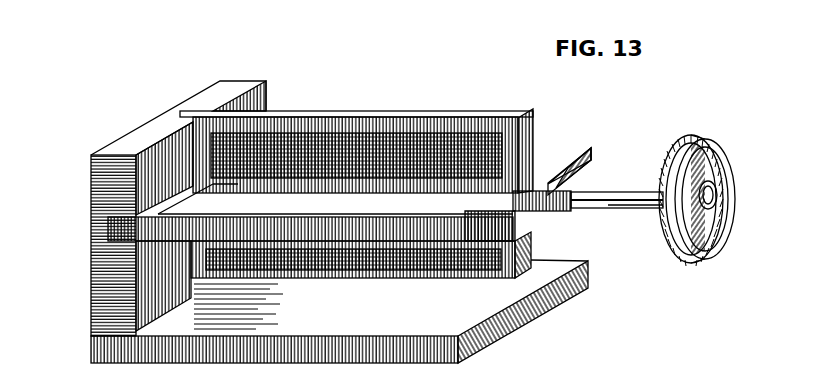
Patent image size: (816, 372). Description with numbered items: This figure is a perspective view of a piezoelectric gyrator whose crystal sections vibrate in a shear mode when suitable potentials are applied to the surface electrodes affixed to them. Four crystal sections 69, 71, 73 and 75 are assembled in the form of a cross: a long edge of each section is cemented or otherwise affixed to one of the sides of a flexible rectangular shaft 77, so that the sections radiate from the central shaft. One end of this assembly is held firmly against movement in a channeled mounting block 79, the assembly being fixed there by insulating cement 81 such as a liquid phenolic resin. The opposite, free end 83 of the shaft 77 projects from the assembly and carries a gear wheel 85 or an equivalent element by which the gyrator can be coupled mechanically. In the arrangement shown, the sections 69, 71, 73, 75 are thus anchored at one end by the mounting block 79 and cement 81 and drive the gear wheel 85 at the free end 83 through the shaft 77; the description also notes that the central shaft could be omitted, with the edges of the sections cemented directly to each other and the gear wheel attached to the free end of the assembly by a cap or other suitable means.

The section 69 is at (497, 108).
The section 71 is at (583, 148).
The section 73 is at (525, 244).
The section 75 is at (433, 218).
The flexible rectangular shaft 77 is at (567, 183).
The channeled mounting block 79 is at (88, 172).
The insulating cement 81 is at (163, 112).
The free end 83 is at (638, 198).
The gear wheel 85 is at (700, 249).